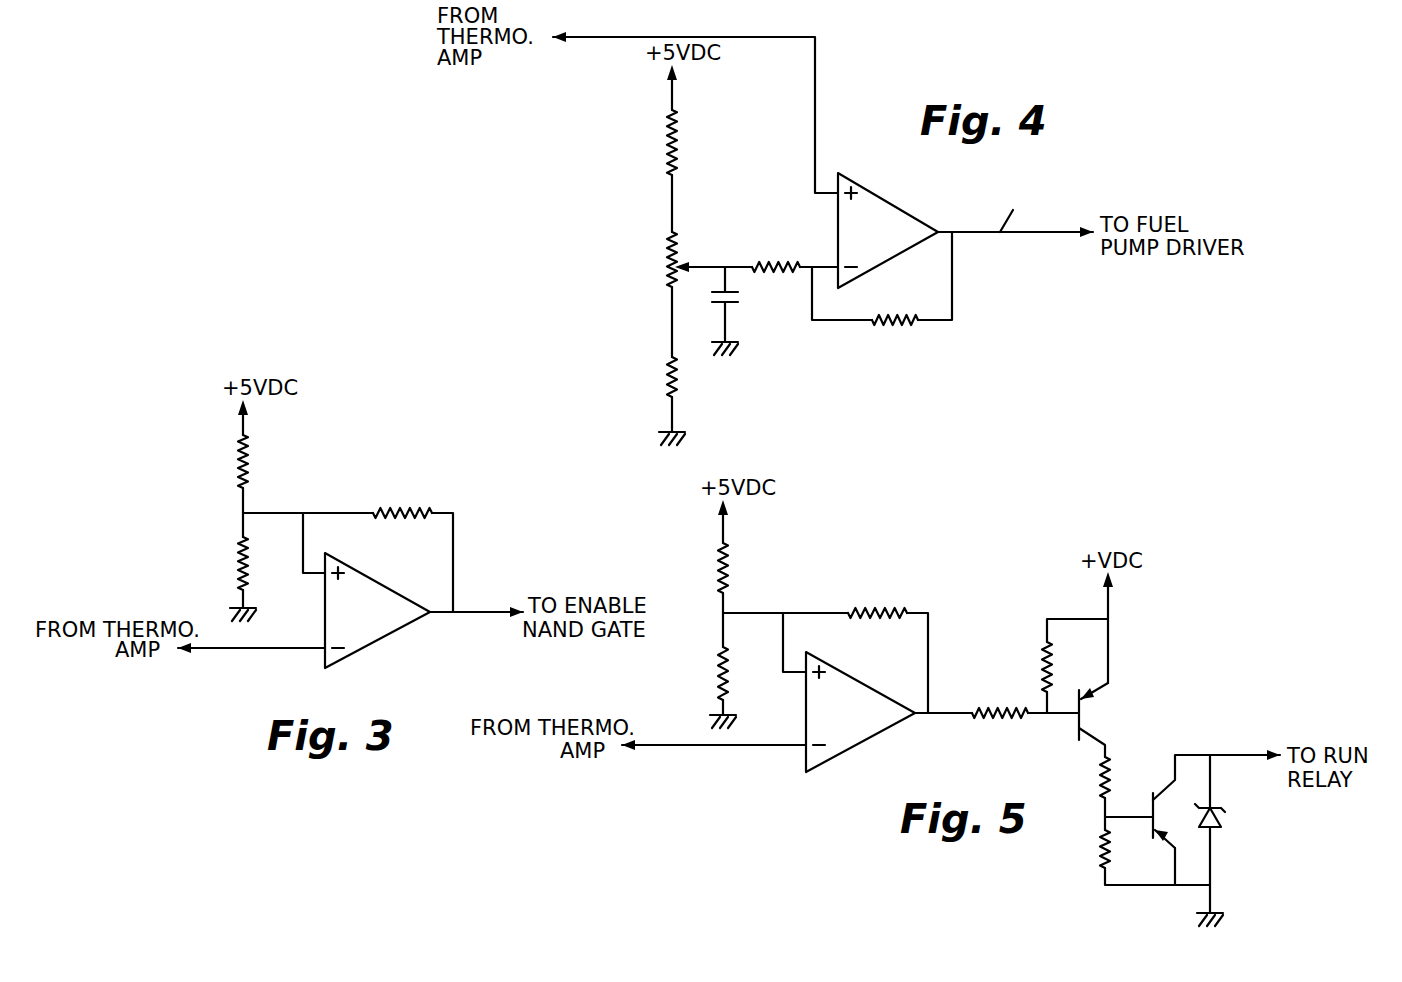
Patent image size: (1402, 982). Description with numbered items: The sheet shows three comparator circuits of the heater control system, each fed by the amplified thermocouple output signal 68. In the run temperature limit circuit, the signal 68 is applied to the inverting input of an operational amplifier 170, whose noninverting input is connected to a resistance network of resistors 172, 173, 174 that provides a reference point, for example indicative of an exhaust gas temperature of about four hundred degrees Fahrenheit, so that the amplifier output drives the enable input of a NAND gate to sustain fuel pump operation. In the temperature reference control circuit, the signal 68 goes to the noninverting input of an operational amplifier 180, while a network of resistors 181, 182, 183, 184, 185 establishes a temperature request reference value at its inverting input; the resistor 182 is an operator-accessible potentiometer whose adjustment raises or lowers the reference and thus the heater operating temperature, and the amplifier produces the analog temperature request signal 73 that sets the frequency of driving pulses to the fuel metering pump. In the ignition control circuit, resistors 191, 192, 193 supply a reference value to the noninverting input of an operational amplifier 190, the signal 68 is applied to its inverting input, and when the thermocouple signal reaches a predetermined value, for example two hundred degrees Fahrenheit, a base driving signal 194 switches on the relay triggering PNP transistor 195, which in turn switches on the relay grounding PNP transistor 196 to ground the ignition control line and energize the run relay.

In FIG. 4, the amplified thermocouple output signal 68 is at (763, 38).
In FIG. 3, the amplified thermocouple output signal 68 is at (258, 649).
In FIG. 5, the amplified thermocouple output signal 68 is at (740, 746).
In FIG. 4, the temperature request signal 73 is at (1020, 208).
In FIG. 3, the operational amplifier 170 is at (378, 585).
In FIG. 3, the resistor 172 is at (247, 455).
In FIG. 3, the resistor 173 is at (248, 570).
In FIG. 3, the resistor 174 is at (400, 508).
In FIG. 4, the operational amplifier 180 is at (898, 205).
In FIG. 4, the resistor 181 is at (677, 160).
In FIG. 4, the potentiometer resistor element 182 is at (665, 255).
In FIG. 4, the resistor 183 is at (677, 385).
In FIG. 4, the resistor 184 is at (757, 262).
In FIG. 4, the resistor 185 is at (885, 325).
In FIG. 5, the operational amplifier 190 is at (870, 700).
In FIG. 5, the resistor 191 is at (728, 568).
In FIG. 5, the resistor 192 is at (728, 672).
In FIG. 5, the resistor 193 is at (875, 608).
In FIG. 5, the base driving signal 194 is at (955, 714).
In FIG. 5, the relay triggering PNP transistor 195 is at (1090, 710).
In FIG. 5, the relay grounding PNP transistor 196 is at (1178, 806).